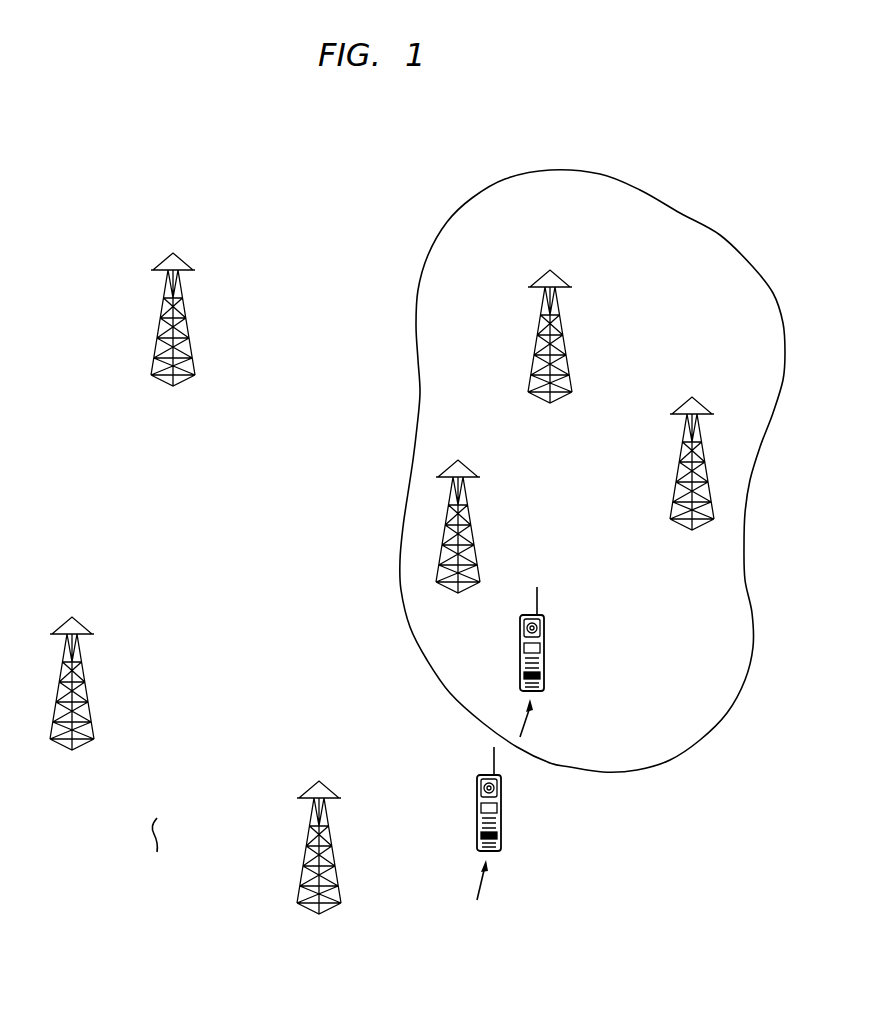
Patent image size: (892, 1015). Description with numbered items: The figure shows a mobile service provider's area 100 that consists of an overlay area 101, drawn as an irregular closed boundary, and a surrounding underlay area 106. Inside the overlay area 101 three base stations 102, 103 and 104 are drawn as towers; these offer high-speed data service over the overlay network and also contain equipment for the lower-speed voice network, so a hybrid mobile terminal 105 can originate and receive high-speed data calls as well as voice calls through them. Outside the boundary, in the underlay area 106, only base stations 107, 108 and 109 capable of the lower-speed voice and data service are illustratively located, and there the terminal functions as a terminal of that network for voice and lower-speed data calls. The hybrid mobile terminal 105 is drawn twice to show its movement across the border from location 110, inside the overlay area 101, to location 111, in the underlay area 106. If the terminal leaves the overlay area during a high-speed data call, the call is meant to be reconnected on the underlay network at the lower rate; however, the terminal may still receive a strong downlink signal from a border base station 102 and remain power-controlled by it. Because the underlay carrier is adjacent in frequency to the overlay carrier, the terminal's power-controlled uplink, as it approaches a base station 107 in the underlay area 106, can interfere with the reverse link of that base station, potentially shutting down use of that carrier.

The mobile service provider's area 100 is at (688, 994).
The overlay area 101 is at (718, 234).
The base station 102 is at (473, 475).
The base station 103 is at (707, 412).
The base station 104 is at (565, 285).
The hybrid mobile terminal 105 is at (543, 660).
The underlay area 106 is at (155, 850).
The base station 107 is at (334, 796).
The base station 108 is at (88, 630).
The base station 109 is at (188, 268).
The location 110 is at (527, 723).
The location 111 is at (482, 880).